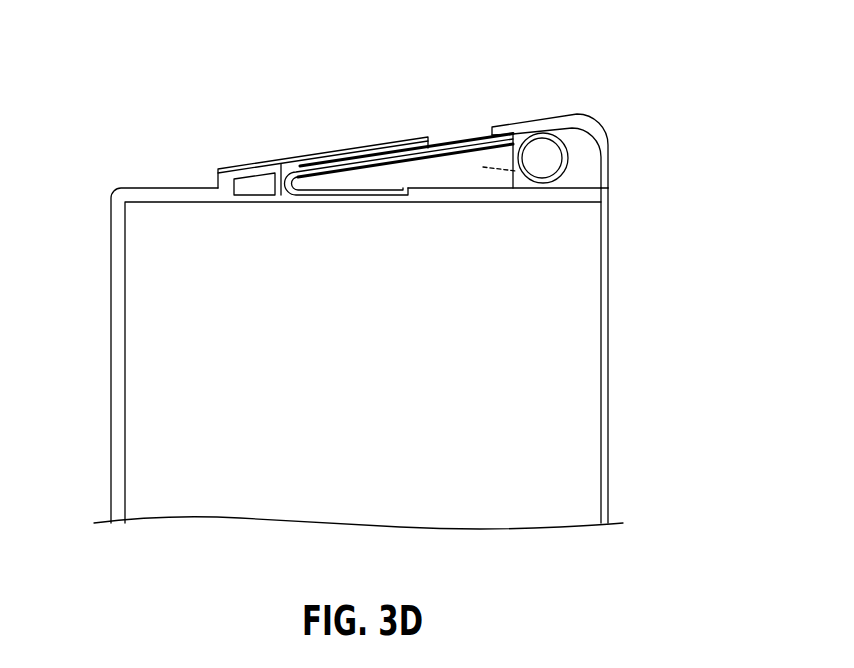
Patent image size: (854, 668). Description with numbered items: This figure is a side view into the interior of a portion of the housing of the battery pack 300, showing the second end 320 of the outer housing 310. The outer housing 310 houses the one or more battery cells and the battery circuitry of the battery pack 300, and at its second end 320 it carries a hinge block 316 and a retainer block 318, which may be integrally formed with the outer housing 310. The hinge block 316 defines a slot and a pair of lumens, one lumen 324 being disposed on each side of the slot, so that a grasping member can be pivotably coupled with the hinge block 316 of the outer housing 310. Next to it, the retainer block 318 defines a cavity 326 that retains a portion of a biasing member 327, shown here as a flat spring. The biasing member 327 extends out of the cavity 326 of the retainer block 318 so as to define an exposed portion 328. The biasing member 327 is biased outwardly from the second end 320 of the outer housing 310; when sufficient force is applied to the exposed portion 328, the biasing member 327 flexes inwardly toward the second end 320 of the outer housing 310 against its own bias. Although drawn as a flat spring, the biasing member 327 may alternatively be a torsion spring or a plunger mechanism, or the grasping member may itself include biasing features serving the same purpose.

The battery pack 300 is at (583, 62).
The outer housing 310 is at (603, 308).
The hinge block 316 is at (580, 117).
The retainer block 318 is at (287, 158).
The second end 320 is at (150, 187).
The lumen 324 is at (550, 158).
The cavity 326 is at (516, 171).
The biasing member 327 is at (378, 162).
The exposed portion 328 is at (464, 145).